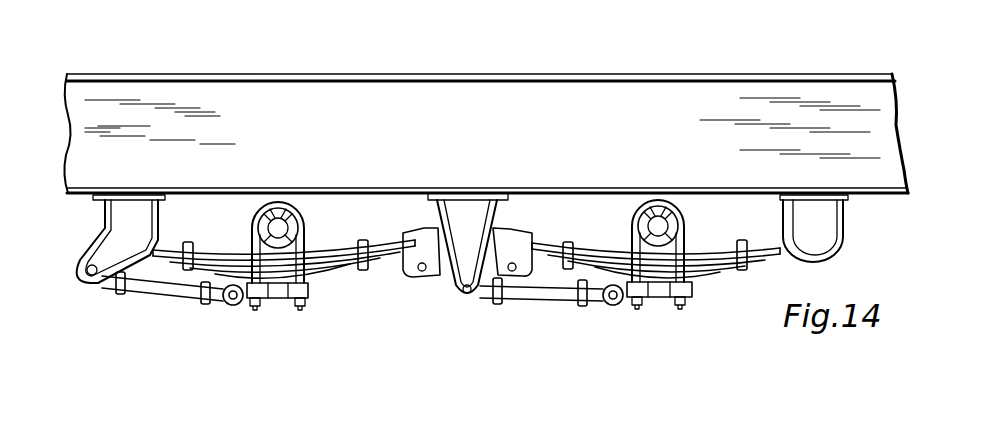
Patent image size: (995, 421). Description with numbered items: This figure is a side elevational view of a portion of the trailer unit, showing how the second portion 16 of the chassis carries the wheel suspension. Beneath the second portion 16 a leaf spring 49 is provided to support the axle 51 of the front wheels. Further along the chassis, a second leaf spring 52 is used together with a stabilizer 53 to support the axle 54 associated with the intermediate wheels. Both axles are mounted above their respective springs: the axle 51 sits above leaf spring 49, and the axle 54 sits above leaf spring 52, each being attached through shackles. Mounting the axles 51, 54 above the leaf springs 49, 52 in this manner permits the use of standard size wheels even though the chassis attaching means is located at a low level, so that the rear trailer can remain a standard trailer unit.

The second portion of the chassis 16 is at (497, 95).
The leaf spring 49 is at (350, 280).
The axle 51 is at (290, 218).
The leaf spring 52 is at (727, 278).
The stabilizer 53 is at (535, 288).
The axle 54 is at (660, 213).